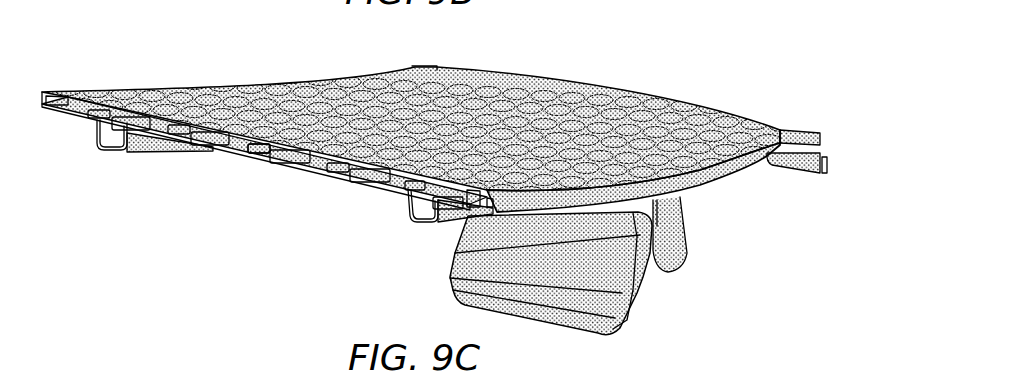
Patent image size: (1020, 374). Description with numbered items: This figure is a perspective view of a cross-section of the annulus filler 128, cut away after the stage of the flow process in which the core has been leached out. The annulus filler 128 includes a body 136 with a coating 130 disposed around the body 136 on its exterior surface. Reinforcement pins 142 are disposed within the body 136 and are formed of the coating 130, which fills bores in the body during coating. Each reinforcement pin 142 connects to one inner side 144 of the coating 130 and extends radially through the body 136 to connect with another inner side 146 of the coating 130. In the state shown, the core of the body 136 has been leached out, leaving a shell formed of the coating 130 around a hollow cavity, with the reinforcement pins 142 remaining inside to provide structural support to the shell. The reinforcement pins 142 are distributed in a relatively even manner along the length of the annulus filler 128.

The annulus filler 128 is at (718, 75).
The coating 130 is at (588, 92).
The body 136 is at (107, 142).
The reinforcement pins 142 is at (315, 153).
The inner side 144 is at (258, 155).
The inner side 146 is at (350, 173).